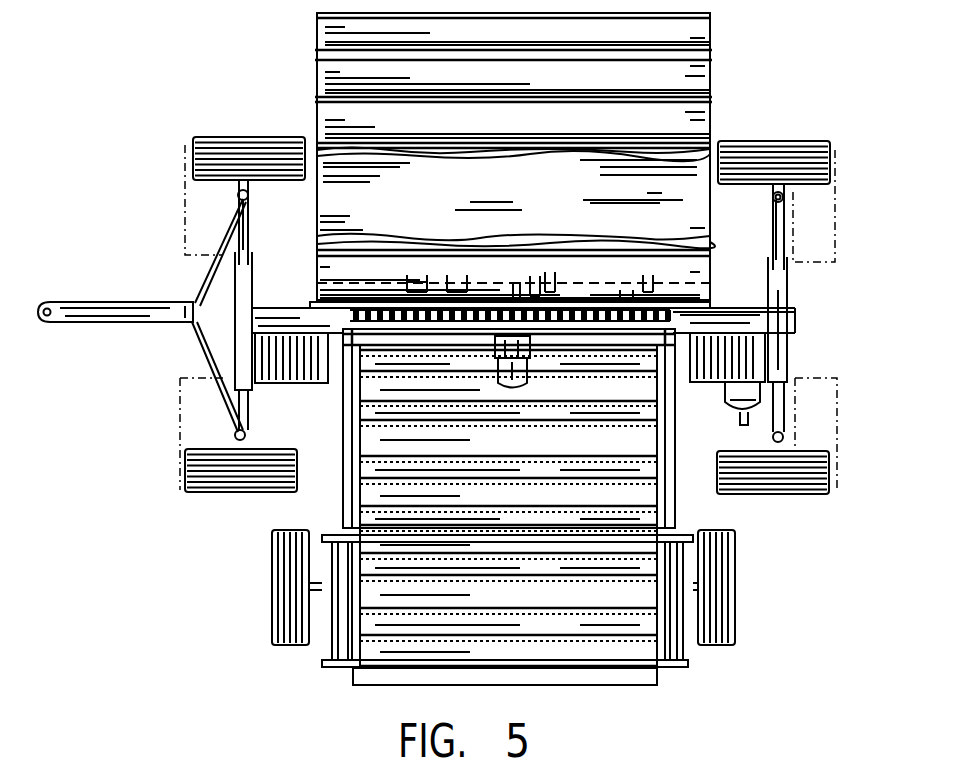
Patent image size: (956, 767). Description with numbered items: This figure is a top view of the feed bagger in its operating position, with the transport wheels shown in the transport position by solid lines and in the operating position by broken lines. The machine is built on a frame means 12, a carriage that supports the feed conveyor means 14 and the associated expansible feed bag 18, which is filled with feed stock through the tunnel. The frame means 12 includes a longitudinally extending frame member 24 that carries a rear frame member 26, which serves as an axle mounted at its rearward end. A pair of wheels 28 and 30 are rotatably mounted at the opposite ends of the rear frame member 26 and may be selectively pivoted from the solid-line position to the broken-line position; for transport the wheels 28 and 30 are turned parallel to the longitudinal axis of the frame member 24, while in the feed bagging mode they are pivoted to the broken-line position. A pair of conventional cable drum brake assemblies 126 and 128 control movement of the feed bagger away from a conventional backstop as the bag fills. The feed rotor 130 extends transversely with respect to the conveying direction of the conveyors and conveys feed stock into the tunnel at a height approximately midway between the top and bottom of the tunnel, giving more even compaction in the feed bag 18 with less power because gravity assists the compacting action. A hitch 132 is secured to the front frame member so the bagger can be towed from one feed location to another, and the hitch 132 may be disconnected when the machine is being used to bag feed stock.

The frame means 12 is at (290, 297).
The feed conveyor means 14 is at (600, 680).
The feed bag 18 is at (345, 217).
The longitudinally extending frame member 24 is at (753, 324).
The rear frame member 26 is at (785, 342).
The wheel 28 is at (775, 158).
The wheel 30 is at (791, 478).
The cable drum brake assembly 126 is at (293, 384).
The cable drum brake assembly 128 is at (717, 384).
The feed rotor 130 is at (553, 322).
The hitch 132 is at (112, 304).